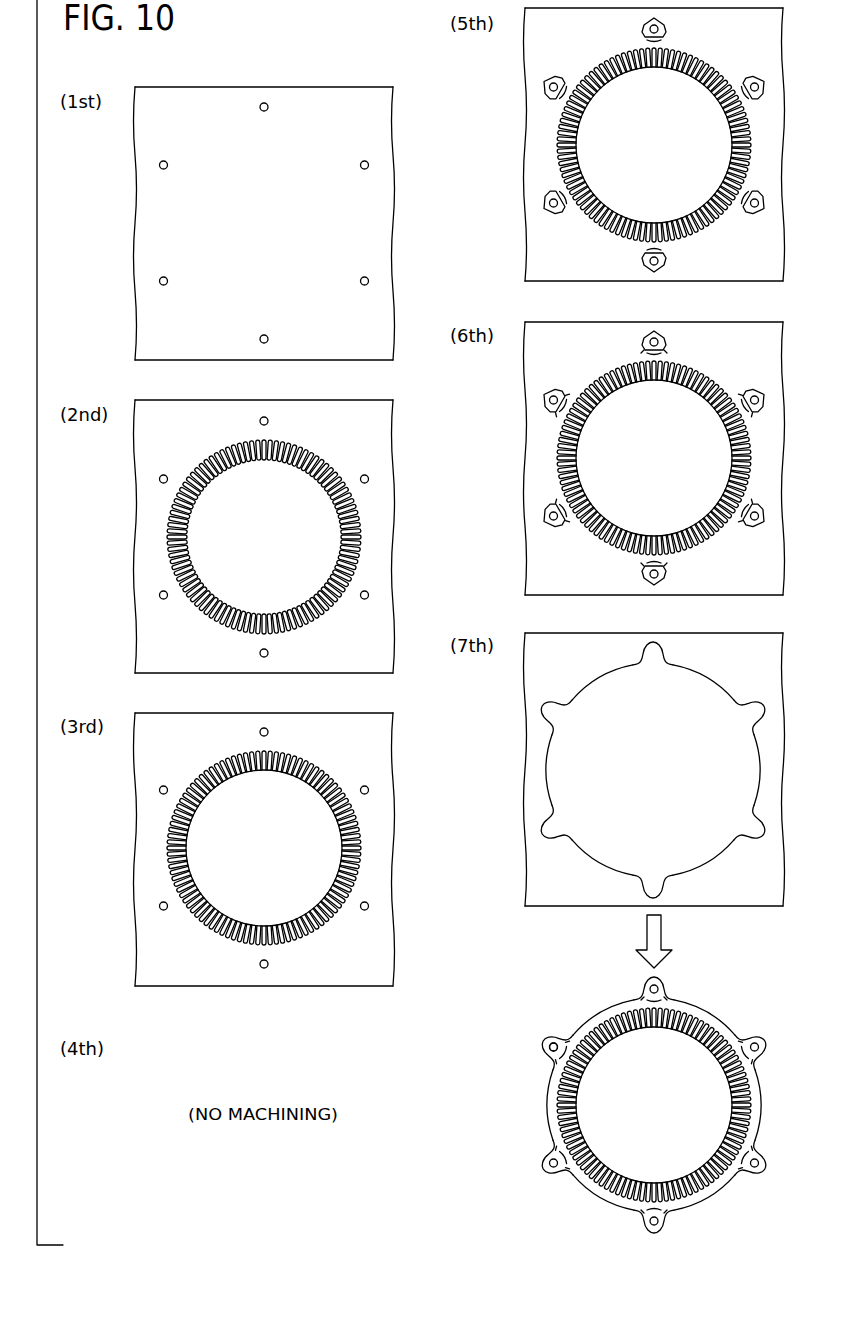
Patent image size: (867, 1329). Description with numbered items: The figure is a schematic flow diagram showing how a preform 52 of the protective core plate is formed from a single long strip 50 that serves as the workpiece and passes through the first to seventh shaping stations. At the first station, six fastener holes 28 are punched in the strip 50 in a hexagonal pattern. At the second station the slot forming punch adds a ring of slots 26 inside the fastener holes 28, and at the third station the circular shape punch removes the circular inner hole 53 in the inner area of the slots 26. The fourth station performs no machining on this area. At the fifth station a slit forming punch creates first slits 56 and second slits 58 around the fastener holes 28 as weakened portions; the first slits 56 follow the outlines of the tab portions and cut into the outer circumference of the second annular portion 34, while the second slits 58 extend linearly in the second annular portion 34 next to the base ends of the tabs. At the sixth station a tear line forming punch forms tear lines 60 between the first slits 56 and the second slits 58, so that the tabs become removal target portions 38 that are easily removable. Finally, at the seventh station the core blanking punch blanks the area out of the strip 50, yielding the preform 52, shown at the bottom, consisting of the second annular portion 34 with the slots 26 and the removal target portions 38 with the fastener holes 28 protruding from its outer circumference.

The slots 26 is at (327, 465).
The fastener holes 28 is at (265, 113).
The second annular portion 34 is at (551, 1128).
The removal target portions 38 is at (544, 1046).
The strip 50 is at (147, 218).
The protective core plate preform 52 is at (740, 1014).
The circular inner hole 53 is at (337, 818).
The first slits 56 is at (547, 80).
The second slits 58 is at (546, 89).
The tear lines 60 is at (564, 389).